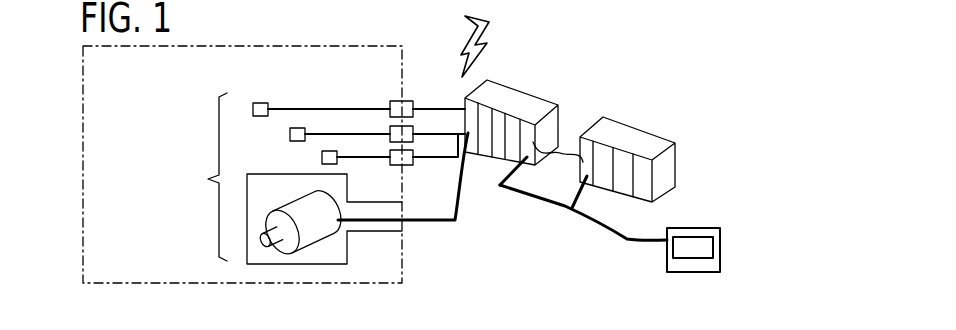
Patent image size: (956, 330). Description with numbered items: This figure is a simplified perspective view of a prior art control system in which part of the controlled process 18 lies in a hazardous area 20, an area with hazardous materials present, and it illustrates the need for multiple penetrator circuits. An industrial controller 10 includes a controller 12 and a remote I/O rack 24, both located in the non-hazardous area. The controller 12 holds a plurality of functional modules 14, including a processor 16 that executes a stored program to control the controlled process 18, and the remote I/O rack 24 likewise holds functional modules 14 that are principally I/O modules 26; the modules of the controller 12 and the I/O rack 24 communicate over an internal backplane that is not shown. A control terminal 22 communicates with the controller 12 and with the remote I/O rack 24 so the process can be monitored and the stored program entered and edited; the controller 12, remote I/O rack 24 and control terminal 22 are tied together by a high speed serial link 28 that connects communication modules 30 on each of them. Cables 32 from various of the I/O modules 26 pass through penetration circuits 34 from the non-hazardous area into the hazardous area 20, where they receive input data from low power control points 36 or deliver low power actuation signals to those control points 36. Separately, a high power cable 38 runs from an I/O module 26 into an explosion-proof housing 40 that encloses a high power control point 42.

The industrial controller 10 is at (642, 91).
The controller 12 is at (657, 137).
The functional modules 14 is at (498, 150).
The processor 16 is at (630, 173).
The controlled process 18 is at (204, 177).
The hazardous area 20 is at (82, 170).
The control terminal 22 is at (708, 228).
The remote I/O rack 24 is at (543, 97).
The I/O modules 26 is at (492, 110).
The high speed serial link 28 is at (542, 199).
The communication modules 30 is at (556, 151).
The cables 32 is at (440, 134).
The penetration circuits 34 is at (408, 99).
The low power control points 36 is at (297, 127).
The high power cable 38 is at (432, 221).
The explosion-proof housing 40 is at (322, 264).
The high power control point 42 is at (300, 250).